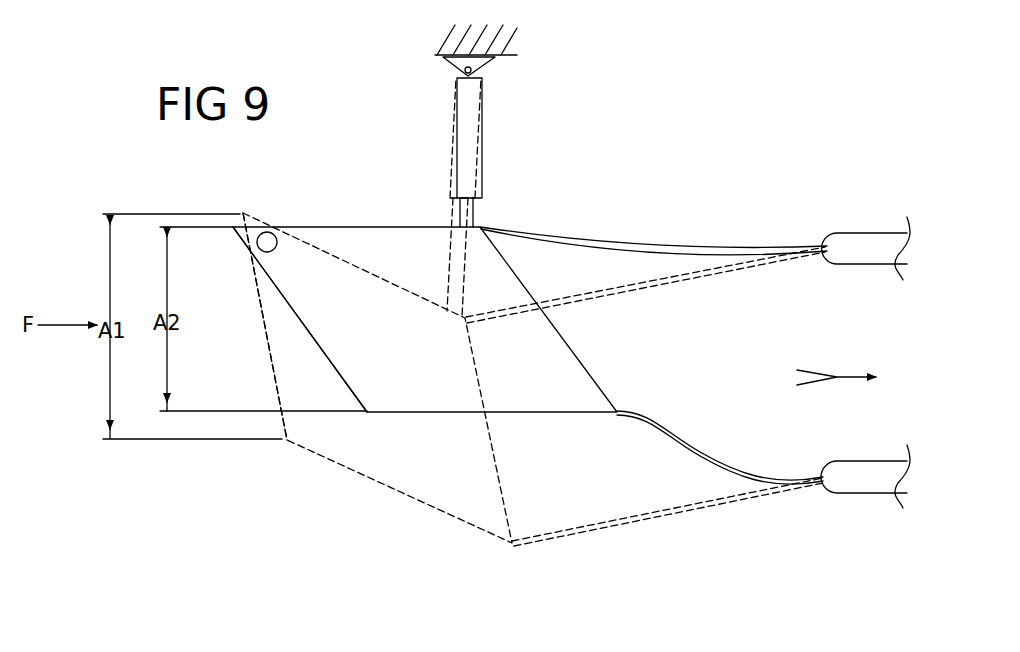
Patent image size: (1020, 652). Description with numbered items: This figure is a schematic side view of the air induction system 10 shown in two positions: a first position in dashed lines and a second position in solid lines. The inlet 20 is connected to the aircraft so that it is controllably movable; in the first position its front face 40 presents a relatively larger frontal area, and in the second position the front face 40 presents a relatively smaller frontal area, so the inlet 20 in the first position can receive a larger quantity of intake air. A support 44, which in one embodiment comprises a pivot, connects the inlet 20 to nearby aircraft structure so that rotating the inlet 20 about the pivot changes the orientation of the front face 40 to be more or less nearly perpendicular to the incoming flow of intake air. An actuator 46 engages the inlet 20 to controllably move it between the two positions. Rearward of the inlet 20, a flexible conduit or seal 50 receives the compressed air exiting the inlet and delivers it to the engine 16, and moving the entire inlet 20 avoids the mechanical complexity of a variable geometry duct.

The air induction system 10 is at (133, 185).
The engine 16 is at (858, 242).
The inlet 20 is at (452, 413).
The front face 40 is at (310, 333).
The support 44 is at (266, 240).
The actuator 46 is at (450, 183).
The flexible conduit or seal 50 is at (640, 283).